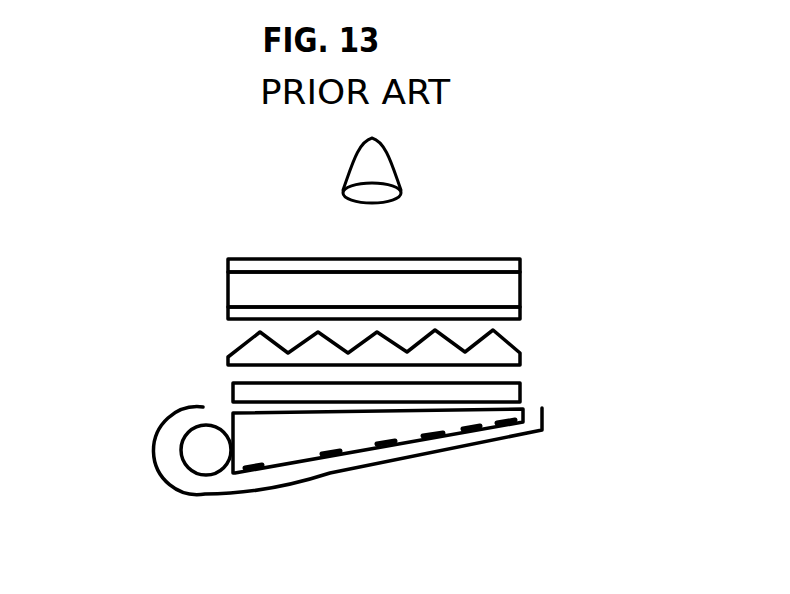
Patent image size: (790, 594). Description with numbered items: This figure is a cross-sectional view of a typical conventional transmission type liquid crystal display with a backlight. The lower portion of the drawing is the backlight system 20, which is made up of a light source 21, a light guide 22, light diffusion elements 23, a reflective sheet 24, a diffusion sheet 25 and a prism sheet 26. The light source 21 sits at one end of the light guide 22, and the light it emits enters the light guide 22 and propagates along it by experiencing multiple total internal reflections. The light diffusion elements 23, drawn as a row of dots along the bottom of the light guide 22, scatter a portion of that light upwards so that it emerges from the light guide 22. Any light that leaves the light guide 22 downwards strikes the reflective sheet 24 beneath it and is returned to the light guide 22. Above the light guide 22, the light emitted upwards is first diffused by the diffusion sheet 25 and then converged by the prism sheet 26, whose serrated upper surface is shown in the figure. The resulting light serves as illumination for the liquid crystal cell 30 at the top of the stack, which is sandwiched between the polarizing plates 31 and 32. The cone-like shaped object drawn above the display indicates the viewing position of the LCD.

The backlight system 20 is at (141, 333).
The light source 21 is at (198, 455).
The light guide 22 is at (310, 435).
The light diffusion elements 23 is at (430, 443).
The reflective sheet 24 is at (513, 438).
The diffusion sheet 25 is at (520, 386).
The prism sheet 26 is at (520, 352).
The liquid crystal cell 30 is at (520, 287).
The polarizing plate 31 is at (520, 262).
The polarizing plate 32 is at (520, 312).